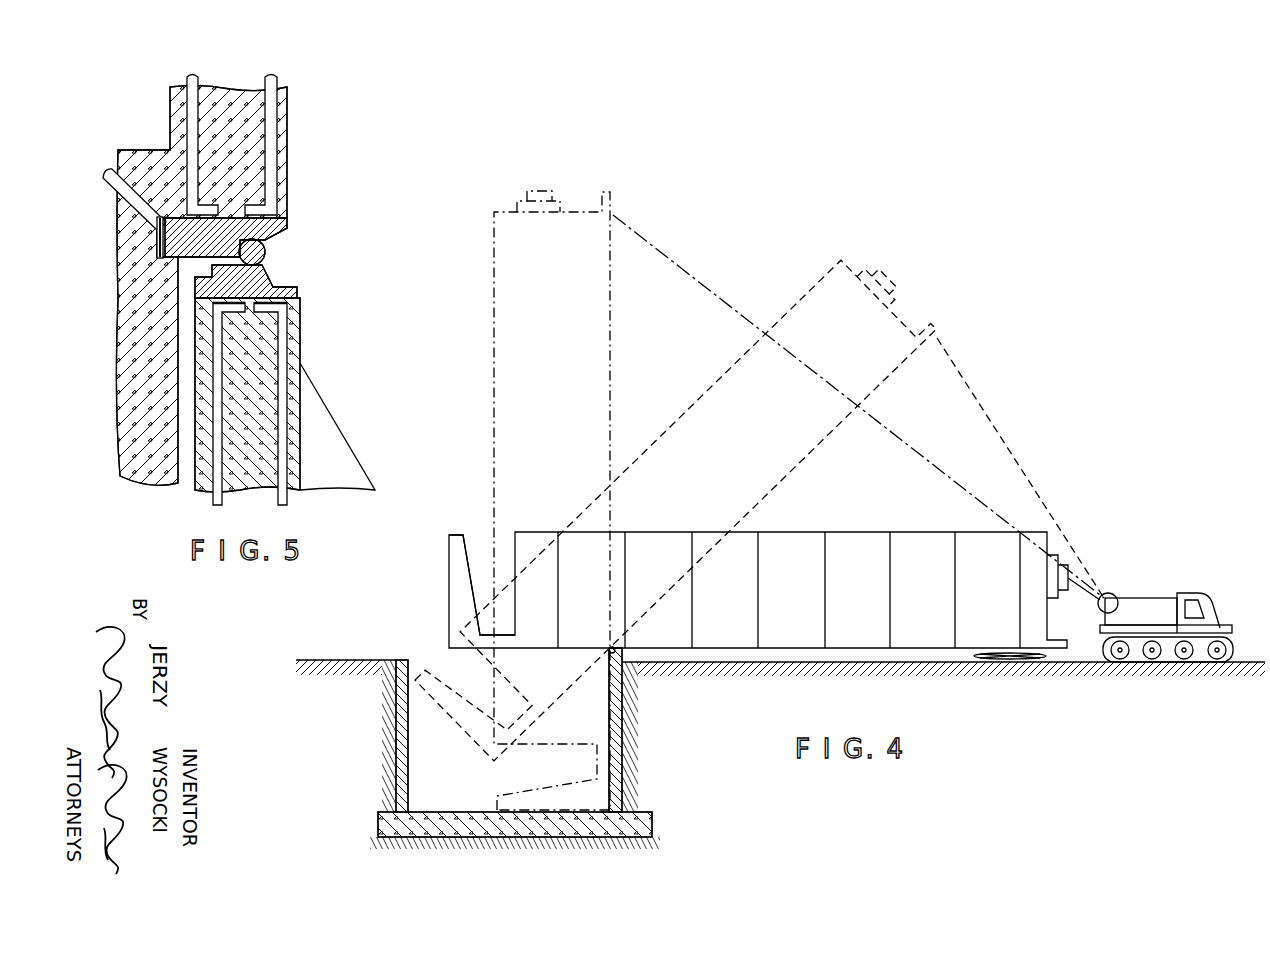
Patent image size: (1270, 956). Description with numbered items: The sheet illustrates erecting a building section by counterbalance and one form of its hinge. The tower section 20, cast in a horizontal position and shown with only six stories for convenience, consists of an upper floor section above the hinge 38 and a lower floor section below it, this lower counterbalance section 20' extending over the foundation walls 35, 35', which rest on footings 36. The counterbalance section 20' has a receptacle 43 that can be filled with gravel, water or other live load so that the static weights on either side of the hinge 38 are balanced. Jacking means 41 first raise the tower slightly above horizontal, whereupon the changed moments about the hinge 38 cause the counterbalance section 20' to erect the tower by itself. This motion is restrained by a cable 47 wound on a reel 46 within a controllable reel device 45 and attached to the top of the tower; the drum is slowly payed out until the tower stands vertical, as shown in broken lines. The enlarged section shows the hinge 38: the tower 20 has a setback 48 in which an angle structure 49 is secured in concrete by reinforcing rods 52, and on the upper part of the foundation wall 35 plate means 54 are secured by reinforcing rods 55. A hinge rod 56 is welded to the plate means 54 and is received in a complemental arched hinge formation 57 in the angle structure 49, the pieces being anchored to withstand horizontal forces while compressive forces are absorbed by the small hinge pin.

In FIG. 5, the tower section 20 is at (251, 271).
In FIG. 5, the reinforcing rods 52 is at (272, 110).
In FIG. 5, the setback 48 is at (160, 232).
In FIG. 5, the angle structure 49 is at (280, 232).
In FIG. 5, the arched hinge formation 57 is at (266, 239).
In FIG. 5, the hinge rod 56 is at (265, 258).
In FIG. 5, the plate means 54 is at (297, 293).
In FIG. 5, the reinforcing rods 55 is at (282, 325).
In FIG. 5, the foundation wall 35 is at (285, 395).
In FIG. 4, the foundation wall 35 is at (647, 730).
In FIG. 4, the foundation wall 35' is at (363, 736).
In FIG. 4, the footings 36 is at (548, 837).
In FIG. 4, the hinge 38 is at (614, 651).
In FIG. 4, the counterbalance section 20' is at (740, 500).
In FIG. 4, the receptacle 43 is at (480, 555).
In FIG. 4, the cable 47 is at (1010, 462).
In FIG. 4, the reel 46 is at (1115, 596).
In FIG. 4, the controllable reel device 45 is at (1174, 585).
In FIG. 4, the jacking means 41 is at (1040, 661).